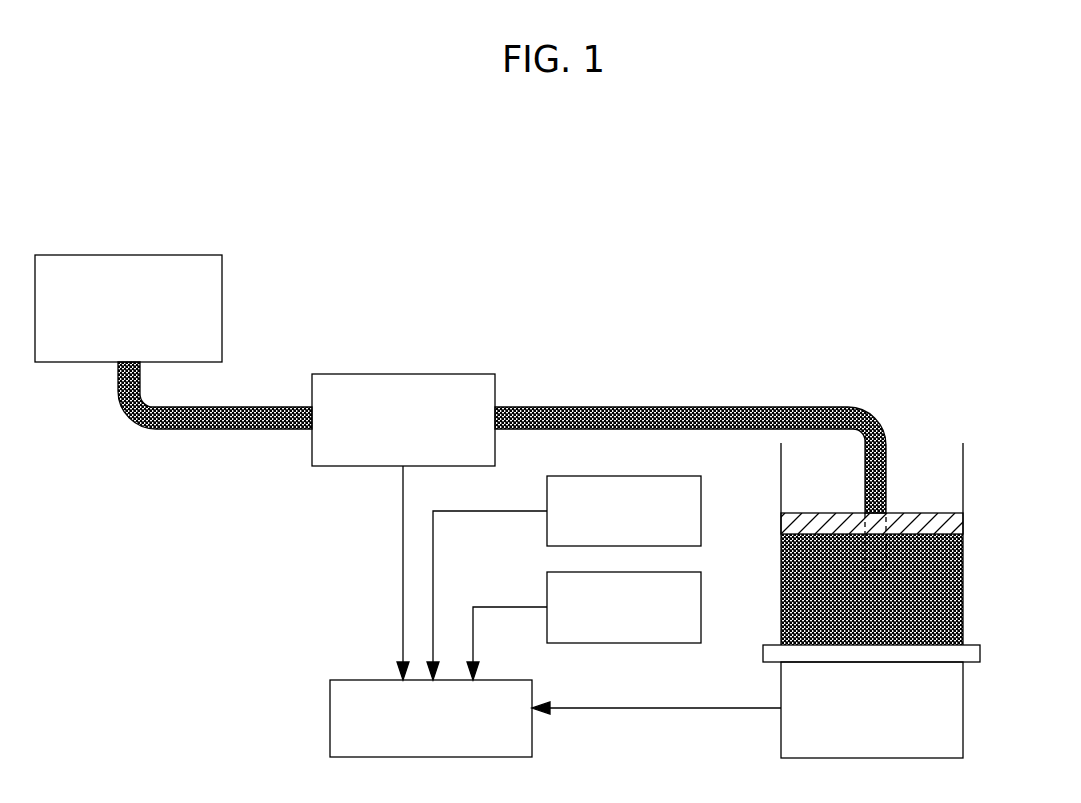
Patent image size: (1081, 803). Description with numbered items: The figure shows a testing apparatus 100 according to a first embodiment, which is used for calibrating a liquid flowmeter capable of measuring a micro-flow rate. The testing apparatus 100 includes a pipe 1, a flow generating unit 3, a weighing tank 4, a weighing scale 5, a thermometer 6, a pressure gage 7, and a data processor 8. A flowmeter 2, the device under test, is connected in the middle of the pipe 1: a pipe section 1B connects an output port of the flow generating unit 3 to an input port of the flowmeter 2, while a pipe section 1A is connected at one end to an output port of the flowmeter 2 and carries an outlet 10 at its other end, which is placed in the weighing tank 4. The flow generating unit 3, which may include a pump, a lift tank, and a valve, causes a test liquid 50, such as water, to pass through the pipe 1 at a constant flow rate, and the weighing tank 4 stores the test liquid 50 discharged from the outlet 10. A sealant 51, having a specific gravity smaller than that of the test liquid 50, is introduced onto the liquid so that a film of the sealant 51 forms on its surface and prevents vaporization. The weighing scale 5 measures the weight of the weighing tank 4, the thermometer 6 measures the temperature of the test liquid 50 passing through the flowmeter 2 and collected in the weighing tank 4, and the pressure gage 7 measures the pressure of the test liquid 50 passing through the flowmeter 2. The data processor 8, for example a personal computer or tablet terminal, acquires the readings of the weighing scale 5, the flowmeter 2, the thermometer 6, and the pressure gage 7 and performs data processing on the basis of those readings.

The testing apparatus 100 is at (1011, 203).
The pipe 1 is at (519, 460).
The pipe section 1A is at (628, 406).
The pipe section 1B is at (228, 430).
The flowmeter 2 is at (404, 374).
The flow generating unit 3 is at (130, 255).
The weighing tank 4 is at (963, 483).
The weighing scale 5 is at (963, 708).
The thermometer 6 is at (701, 512).
The pressure gage 7 is at (701, 609).
The data processor 8 is at (330, 714).
The outlet 10 is at (878, 570).
The test liquid 50 is at (953, 585).
The sealant 51 is at (963, 528).